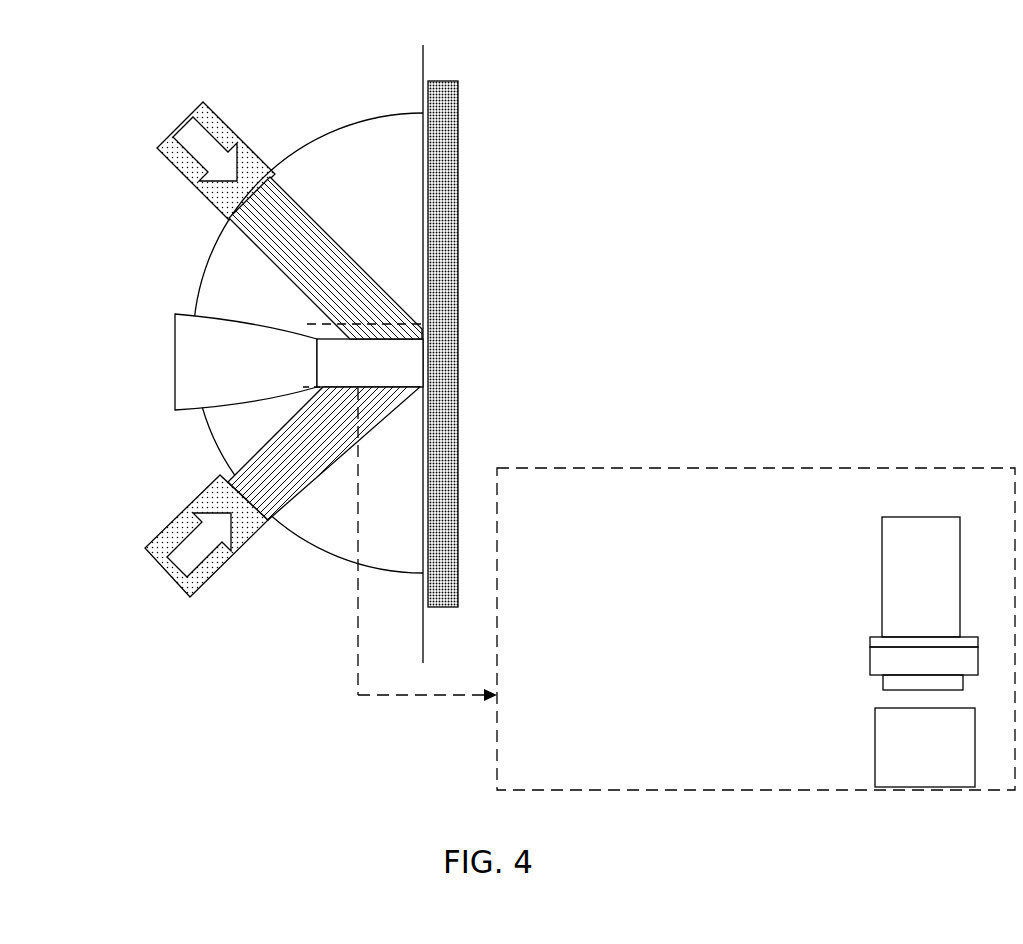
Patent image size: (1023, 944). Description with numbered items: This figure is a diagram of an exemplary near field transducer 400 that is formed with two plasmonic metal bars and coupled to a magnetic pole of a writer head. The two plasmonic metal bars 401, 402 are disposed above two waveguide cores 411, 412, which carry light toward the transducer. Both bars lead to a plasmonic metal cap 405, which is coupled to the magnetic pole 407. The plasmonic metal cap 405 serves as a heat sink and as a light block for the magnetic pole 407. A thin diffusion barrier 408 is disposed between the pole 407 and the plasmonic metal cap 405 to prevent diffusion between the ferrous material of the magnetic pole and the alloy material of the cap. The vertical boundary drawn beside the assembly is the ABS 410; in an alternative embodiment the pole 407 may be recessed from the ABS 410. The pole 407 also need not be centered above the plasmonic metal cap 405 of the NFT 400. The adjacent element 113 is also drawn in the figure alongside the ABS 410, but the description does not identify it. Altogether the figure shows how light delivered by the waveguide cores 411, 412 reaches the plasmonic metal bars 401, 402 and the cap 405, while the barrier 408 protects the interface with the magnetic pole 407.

The near field transducer 400 is at (736, 181).
The plasmonic metal bar 401 is at (240, 232).
The plasmonic metal bar 402 is at (272, 514).
The plasmonic metal cap 405 is at (188, 269).
The magnetic pole 407 is at (175, 334).
The diffusion barrier 408 is at (870, 638).
The ABS 410 is at (425, 58).
The waveguide core 411 is at (181, 124).
The waveguide core 412 is at (150, 568).
The substrate / sample 113 is at (460, 306).